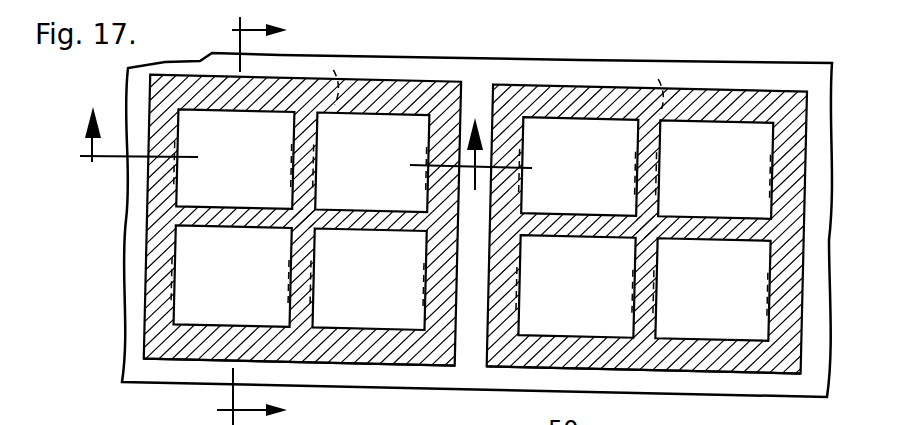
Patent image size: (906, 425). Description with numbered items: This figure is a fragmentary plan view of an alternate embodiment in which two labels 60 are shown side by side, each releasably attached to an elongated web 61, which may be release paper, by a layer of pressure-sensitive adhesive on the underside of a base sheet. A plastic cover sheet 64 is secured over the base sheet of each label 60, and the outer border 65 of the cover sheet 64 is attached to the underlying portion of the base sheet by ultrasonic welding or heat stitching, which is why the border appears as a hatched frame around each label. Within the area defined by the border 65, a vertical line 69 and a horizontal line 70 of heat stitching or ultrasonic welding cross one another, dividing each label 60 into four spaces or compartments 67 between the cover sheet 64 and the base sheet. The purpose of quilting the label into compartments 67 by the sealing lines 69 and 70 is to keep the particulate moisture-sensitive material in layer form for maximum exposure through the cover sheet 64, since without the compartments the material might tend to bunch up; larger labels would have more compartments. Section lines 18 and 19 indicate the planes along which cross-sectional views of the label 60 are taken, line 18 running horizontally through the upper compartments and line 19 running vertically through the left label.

The section line 18- 18 is at (310, 148).
The section line 19- 19 is at (237, 221).
The label 60 is at (440, 79).
The elongated web 61 is at (128, 284).
The cover sheet 64 is at (393, 132).
The outer border 65 is at (161, 345).
The compartments 67 is at (280, 108).
The sealing line 69 is at (309, 176).
The sealing line 70 is at (345, 228).